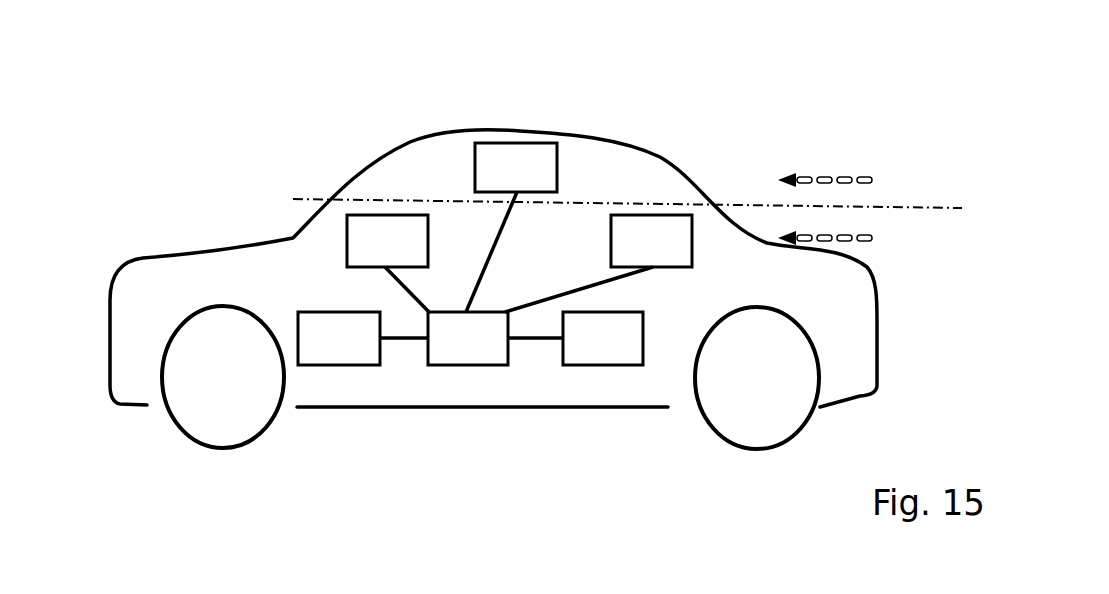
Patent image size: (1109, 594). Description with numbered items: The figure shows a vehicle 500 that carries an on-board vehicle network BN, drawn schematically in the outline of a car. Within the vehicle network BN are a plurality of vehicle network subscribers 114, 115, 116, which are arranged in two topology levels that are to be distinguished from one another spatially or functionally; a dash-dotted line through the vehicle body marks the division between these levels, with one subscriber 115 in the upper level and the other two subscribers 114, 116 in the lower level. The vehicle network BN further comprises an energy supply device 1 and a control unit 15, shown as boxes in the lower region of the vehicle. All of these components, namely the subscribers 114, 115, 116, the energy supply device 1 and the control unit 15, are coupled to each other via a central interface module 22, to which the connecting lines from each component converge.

The vehicle 500 is at (195, 118).
The on-board vehicle network BN is at (315, 247).
The energy supply device 1 is at (363, 338).
The interface module 22 is at (495, 338).
The control unit 15 is at (603, 338).
The vehicle network subscriber 114 is at (388, 264).
The vehicle network subscriber 115 is at (511, 227).
The vehicle network subscriber 116 is at (598, 263).